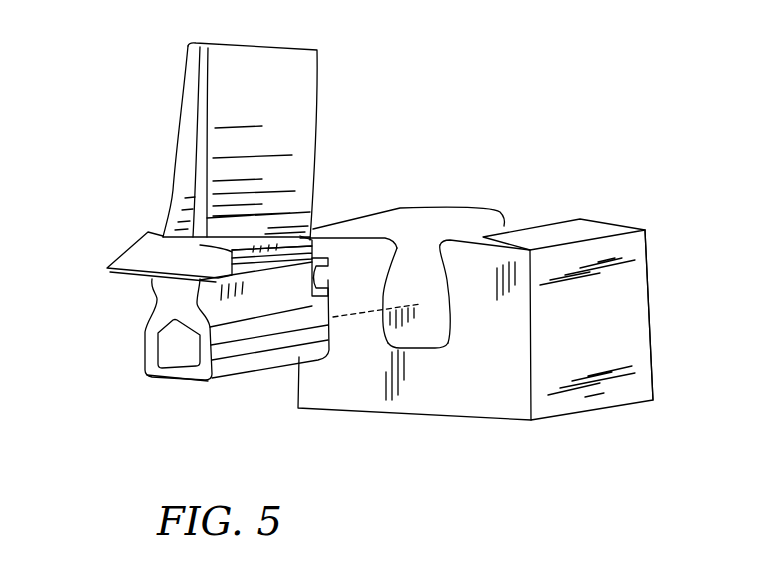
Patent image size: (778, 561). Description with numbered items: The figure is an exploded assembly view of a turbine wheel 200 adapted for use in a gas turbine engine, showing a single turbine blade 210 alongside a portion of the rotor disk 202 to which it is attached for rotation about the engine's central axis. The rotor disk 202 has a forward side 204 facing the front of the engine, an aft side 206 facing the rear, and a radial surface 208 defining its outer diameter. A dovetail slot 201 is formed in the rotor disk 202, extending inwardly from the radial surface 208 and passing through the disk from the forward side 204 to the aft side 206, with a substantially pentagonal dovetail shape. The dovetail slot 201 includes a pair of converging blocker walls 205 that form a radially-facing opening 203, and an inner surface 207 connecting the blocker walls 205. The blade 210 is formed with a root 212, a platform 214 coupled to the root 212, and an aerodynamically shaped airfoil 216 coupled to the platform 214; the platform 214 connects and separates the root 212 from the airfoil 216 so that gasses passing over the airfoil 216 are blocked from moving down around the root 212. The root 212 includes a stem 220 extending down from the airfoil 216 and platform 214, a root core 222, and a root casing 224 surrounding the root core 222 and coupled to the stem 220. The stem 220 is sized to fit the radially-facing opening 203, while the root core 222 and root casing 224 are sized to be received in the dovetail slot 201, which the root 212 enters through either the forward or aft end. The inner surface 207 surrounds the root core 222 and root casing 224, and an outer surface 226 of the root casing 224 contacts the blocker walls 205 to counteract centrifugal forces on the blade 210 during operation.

The turbine wheel 200 is at (465, 242).
The dovetail slot 201 is at (452, 355).
The rotor disk 202 is at (607, 283).
The radially-facing opening 203 is at (459, 306).
The forward side 204 is at (512, 413).
The converging blocker walls 205 is at (388, 258).
The aft side 206 is at (650, 363).
The inner surface 207 is at (413, 348).
The radial surface 208 is at (590, 227).
The turbine blade 210 is at (262, 127).
The root 212 is at (174, 228).
The platform 214 is at (121, 241).
The airfoil 216 is at (168, 127).
The stem 220 is at (127, 362).
The root core 222 is at (181, 349).
The root casing 224 is at (171, 369).
The outer surface 226 is at (248, 350).